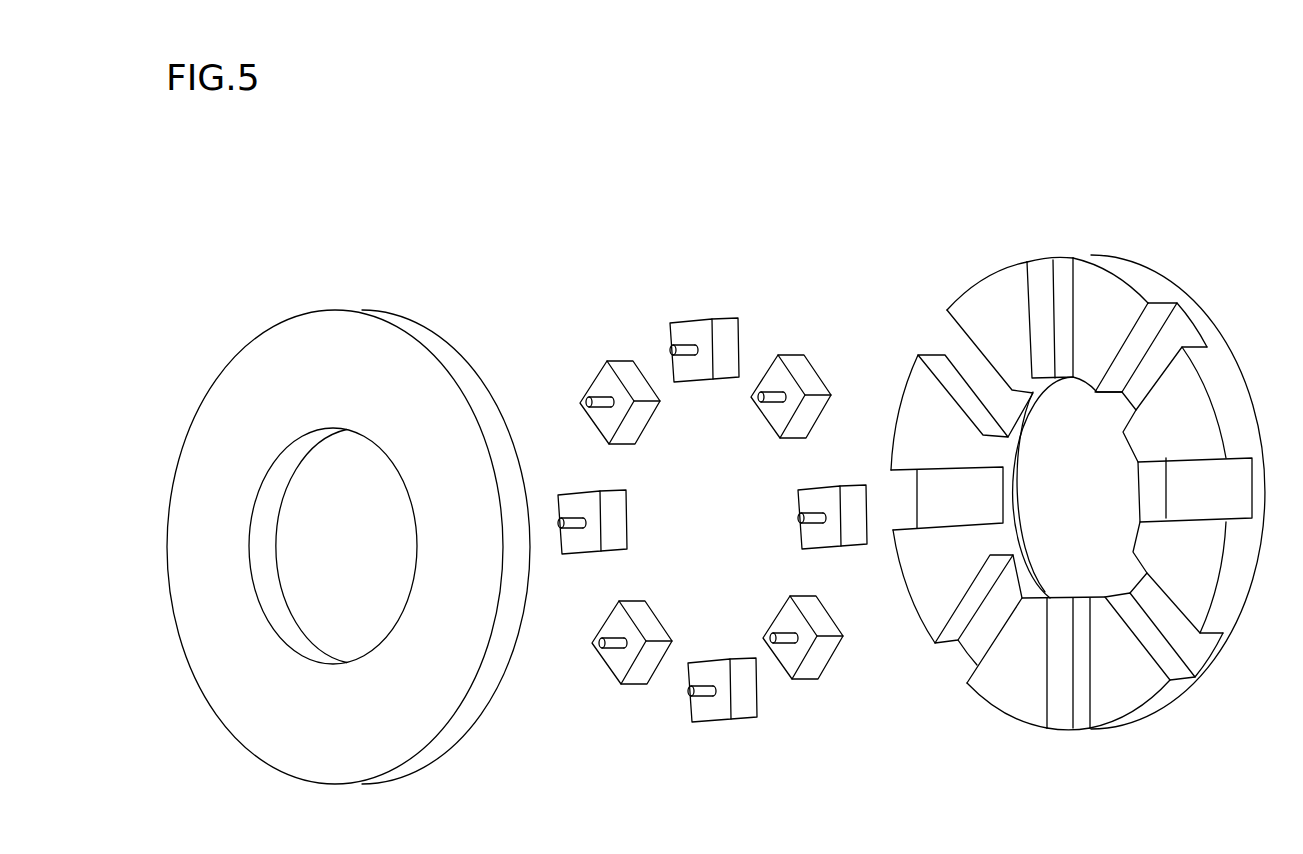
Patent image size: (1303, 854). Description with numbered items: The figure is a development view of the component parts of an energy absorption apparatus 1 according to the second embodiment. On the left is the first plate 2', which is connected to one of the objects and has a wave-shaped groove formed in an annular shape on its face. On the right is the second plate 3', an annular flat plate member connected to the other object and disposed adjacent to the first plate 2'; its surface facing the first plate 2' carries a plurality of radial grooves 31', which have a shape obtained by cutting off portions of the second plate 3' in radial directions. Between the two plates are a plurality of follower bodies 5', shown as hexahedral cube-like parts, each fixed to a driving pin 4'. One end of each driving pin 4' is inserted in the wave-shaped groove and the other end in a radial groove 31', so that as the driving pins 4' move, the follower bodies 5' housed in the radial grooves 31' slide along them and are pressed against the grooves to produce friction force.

The energy absorption apparatus 1 is at (515, 190).
The first plate 2' is at (348, 529).
The second plate 3' is at (1074, 476).
The radial grooves 31' is at (1068, 493).
The driving pins 4' is at (712, 502).
The follower bodies 5' is at (692, 509).